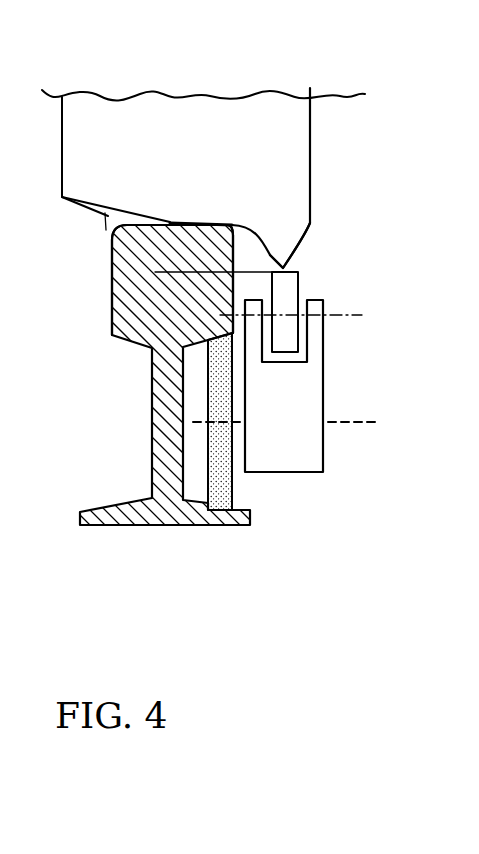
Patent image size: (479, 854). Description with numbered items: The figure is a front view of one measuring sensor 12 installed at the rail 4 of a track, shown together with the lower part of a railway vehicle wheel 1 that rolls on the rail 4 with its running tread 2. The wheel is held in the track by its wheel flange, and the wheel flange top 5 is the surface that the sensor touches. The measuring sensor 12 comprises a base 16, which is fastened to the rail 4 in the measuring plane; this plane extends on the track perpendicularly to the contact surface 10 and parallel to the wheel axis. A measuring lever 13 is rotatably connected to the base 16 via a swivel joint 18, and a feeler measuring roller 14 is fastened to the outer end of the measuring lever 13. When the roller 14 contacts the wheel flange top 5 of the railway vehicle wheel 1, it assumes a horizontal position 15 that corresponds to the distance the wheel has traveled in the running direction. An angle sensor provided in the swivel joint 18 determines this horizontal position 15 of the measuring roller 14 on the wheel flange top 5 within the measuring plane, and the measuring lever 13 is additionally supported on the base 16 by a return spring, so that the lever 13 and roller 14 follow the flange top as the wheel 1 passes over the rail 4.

The railway vehicle wheel 1 is at (173, 97).
The running tread 2 is at (108, 217).
The rail 4 is at (157, 405).
The wheel flange top 5 is at (286, 258).
The contact surface 10 is at (176, 219).
The measuring sensor 12 is at (306, 511).
The measuring lever 13 is at (295, 387).
The measuring roller 14 is at (307, 280).
The horizontal position 15 is at (173, 303).
The base 16 is at (222, 497).
The swivel joint 18 is at (345, 422).